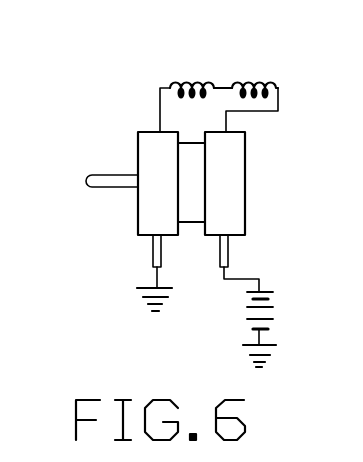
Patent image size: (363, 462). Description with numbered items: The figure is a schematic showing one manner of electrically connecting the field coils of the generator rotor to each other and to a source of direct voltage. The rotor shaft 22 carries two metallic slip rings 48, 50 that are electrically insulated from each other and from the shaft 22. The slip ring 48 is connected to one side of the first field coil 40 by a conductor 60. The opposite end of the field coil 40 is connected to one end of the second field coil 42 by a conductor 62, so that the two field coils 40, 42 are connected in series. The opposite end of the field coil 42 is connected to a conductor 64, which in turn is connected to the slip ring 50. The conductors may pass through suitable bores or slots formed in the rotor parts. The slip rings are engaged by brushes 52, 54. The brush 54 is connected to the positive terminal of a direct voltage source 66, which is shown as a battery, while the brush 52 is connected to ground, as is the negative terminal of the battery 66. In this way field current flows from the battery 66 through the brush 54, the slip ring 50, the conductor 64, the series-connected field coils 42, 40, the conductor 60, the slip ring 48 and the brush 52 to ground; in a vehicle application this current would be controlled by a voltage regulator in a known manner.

The shaft 22 is at (118, 184).
The field coil 40 is at (199, 88).
The field coil 42 is at (263, 86).
The slip ring 48 is at (148, 217).
The slip ring 50 is at (232, 220).
The brush 52 is at (157, 252).
The brush 54 is at (228, 250).
The conductor 60 is at (158, 107).
The conductor 62 is at (223, 88).
The conductor 64 is at (250, 112).
The direct voltage source 66 is at (263, 305).